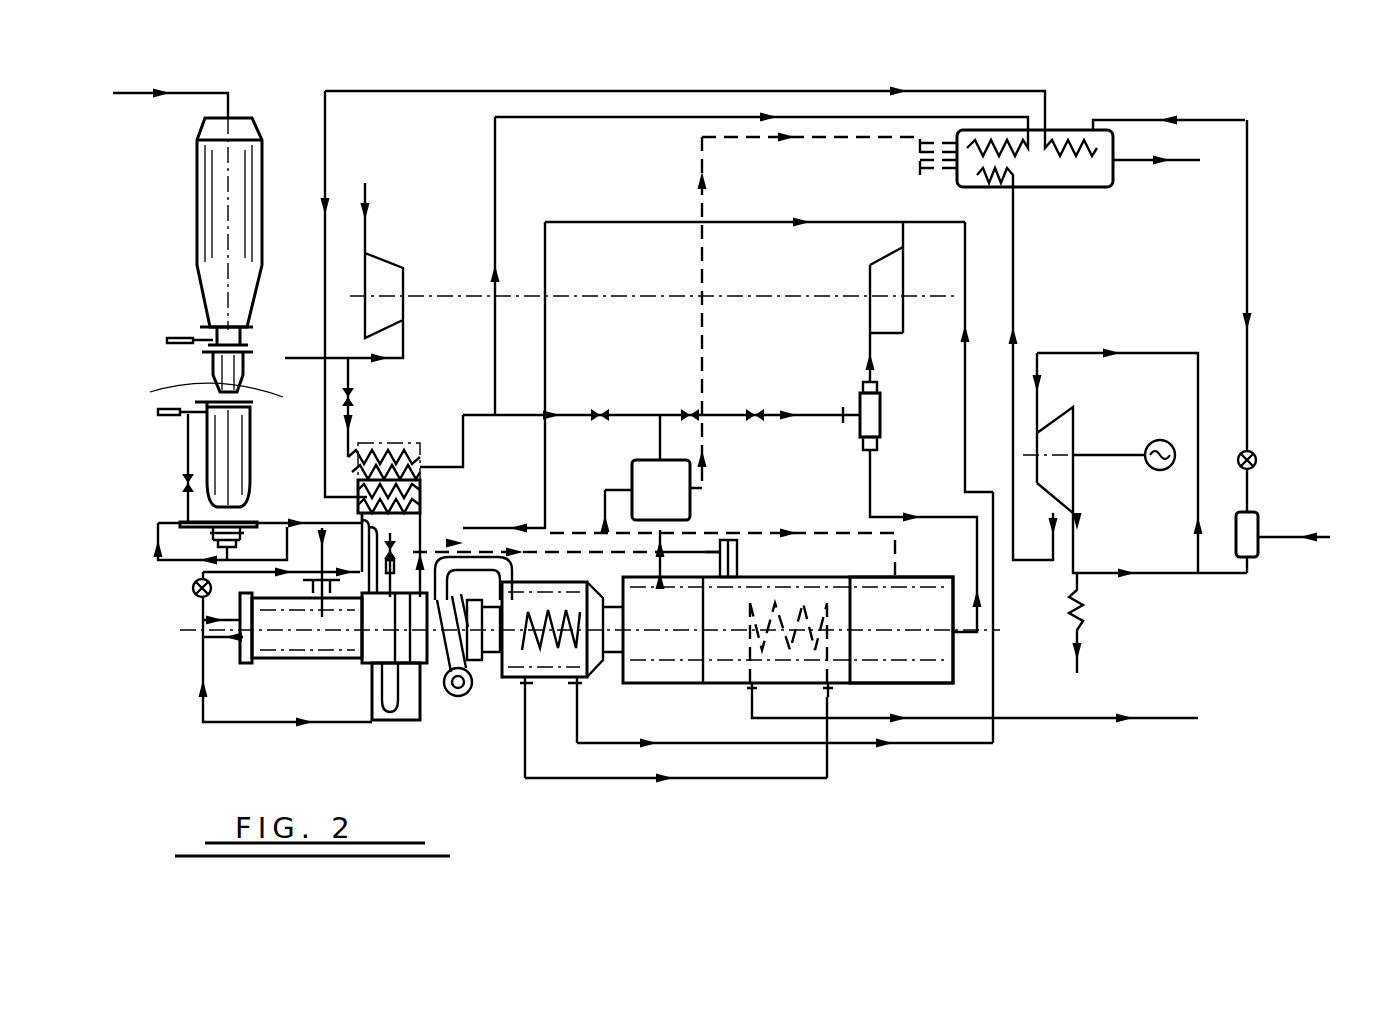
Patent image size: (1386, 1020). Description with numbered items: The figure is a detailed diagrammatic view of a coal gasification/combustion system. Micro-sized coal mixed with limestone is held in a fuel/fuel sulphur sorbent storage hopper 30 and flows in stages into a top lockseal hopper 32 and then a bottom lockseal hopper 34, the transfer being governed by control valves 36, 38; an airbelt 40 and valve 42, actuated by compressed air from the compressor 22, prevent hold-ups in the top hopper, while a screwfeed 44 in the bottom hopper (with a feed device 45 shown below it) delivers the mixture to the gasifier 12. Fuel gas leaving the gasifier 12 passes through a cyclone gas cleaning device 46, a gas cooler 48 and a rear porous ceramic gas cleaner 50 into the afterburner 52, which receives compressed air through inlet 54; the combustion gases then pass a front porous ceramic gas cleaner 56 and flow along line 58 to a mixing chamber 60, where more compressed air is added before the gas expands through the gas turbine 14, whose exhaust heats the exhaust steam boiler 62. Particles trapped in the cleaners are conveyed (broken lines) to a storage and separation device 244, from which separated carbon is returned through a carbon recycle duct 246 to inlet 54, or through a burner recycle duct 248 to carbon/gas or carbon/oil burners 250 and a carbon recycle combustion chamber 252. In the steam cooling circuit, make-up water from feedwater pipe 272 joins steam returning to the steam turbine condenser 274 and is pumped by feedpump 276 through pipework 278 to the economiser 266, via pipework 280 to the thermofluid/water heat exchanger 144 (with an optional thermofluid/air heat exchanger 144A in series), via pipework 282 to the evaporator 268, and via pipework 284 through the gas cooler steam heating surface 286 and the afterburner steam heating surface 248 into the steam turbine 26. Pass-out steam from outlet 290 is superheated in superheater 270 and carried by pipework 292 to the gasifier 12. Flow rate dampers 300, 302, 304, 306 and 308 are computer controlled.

The gasifier 12 is at (322, 663).
The gas turbine 14 is at (862, 302).
The compressor 22 is at (385, 272).
The steam turbine 26 is at (1077, 475).
The fuel/fuel sulphur sorbent storage hopper 30 is at (238, 228).
The top lockseal hopper 32 is at (212, 368).
The bottom lockseal hopper 34 is at (250, 485).
The control valve 36 is at (240, 322).
The control valve 38 is at (233, 413).
The airbelt 40 is at (260, 352).
The valve 42 is at (177, 493).
The screwfeed 44 is at (243, 413).
The feed device 45 is at (222, 538).
The cyclone gas cleaning device 46 is at (428, 665).
The gas cooler 48 is at (497, 690).
The rear porous ceramic gas cleaner 50 is at (668, 708).
The afterburner 52 is at (812, 570).
The inlet 54 is at (737, 565).
The front porous ceramic gas cleaner 56 is at (908, 595).
The line 58 is at (872, 507).
The mixing chamber 60 is at (850, 433).
The exhaust steam boiler 62 is at (1093, 200).
The thermofluid/water heat exchanger 144 is at (437, 510).
The thermofluid/air heat exchanger 144A is at (413, 447).
The storage and separation device 244 is at (650, 488).
The carbon recycle duct 246 is at (687, 553).
The burner recycle duct / afterburner steam heating surface 248 is at (710, 332).
The carbon/gas or carbon/oil burners 250 is at (957, 185).
The carbon recycle combustion chamber 252 is at (955, 128).
The economiser 266 is at (1073, 162).
The evaporator 268 is at (1020, 160).
The superheater 270 is at (1000, 187).
The make-up feedwater pipe 272 is at (1305, 530).
The steam turbine condenser 274 is at (1262, 510).
The feedpump 276 is at (1255, 448).
The pipework 278 is at (1250, 258).
The pipework 280 is at (685, 90).
The pipework 282 is at (540, 123).
The pipework 284 is at (965, 353).
The gas cooler steam heating surface 286 is at (558, 655).
The outlet 290 is at (1057, 513).
The pipework 292 is at (745, 222).
The flow rate damper 300 is at (600, 412).
The flow rate damper 302 is at (685, 412).
The flow rate damper 304 is at (753, 408).
The flow rate damper 306 is at (184, 398).
The flow rate damper 308 is at (353, 400).